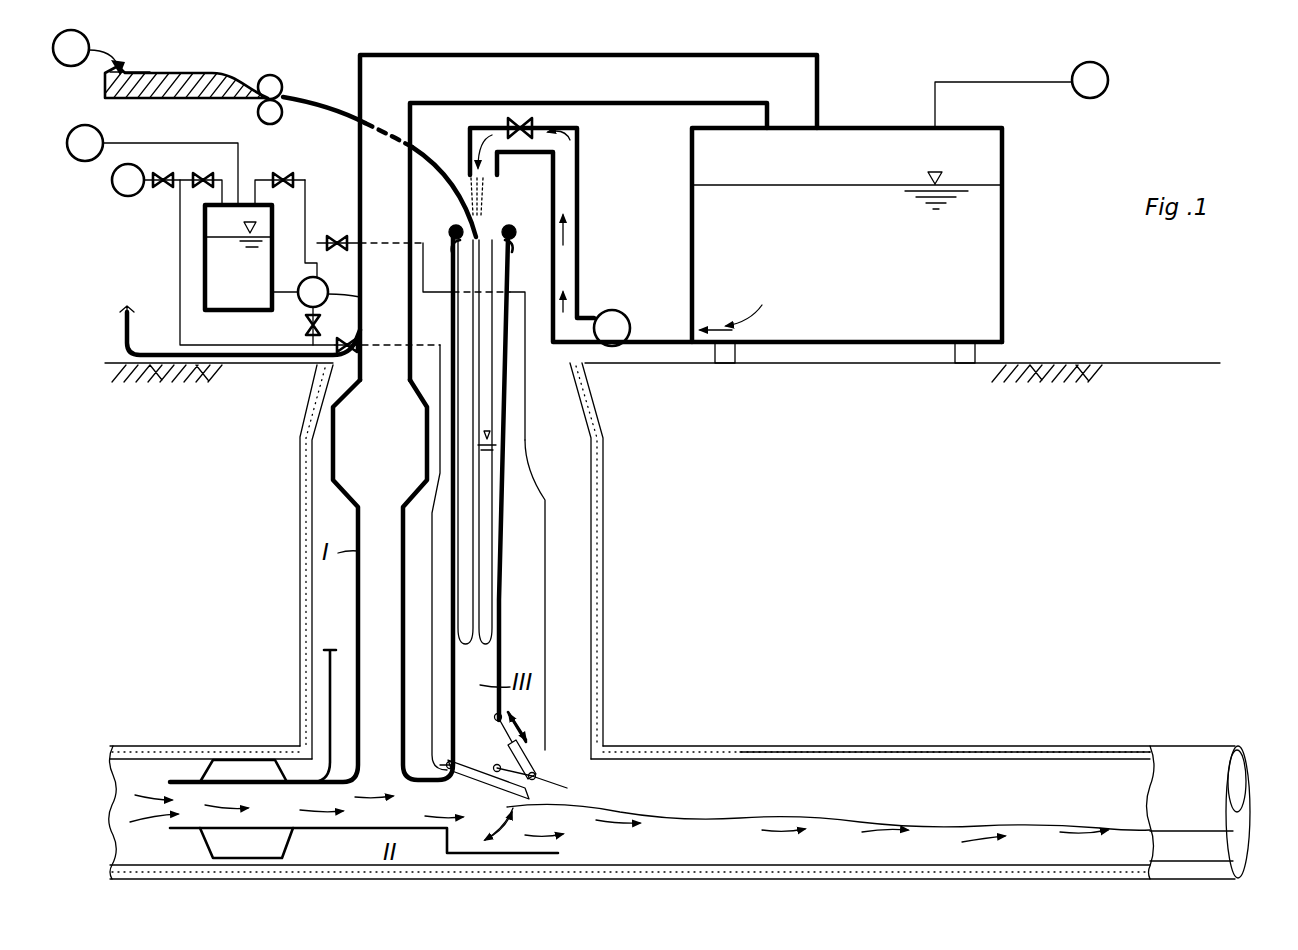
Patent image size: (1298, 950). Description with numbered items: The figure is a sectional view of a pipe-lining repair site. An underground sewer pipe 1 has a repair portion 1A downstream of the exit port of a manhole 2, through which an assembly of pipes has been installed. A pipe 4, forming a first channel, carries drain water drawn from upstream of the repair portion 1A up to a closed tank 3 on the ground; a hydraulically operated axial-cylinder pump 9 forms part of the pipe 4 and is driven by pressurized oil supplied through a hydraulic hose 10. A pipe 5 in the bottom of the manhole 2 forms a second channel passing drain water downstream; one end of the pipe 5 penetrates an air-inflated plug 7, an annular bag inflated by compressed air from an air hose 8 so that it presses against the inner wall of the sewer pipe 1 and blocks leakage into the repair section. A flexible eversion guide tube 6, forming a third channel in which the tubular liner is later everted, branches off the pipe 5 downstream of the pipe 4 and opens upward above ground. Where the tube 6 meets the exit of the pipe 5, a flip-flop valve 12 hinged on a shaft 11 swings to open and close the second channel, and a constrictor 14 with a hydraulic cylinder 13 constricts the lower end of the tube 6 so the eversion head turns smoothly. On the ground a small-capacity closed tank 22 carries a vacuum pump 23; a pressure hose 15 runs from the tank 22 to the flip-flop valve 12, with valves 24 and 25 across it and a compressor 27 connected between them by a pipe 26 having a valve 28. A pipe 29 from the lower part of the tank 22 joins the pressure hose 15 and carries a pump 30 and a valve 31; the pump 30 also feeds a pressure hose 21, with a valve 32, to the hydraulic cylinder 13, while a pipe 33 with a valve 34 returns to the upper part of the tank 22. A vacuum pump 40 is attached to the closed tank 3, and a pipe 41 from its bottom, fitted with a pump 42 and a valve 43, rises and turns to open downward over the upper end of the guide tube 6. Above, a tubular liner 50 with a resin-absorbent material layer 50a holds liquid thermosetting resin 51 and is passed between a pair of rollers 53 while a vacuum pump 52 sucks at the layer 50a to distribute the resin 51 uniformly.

The underground sewer pipe 1 is at (705, 738).
The repair portion 1A is at (882, 762).
The manhole 2 is at (561, 451).
The closed tank 3 is at (1003, 270).
The pipe 4 is at (358, 602).
The pipe 5 is at (338, 842).
The eversion guide tube 6 is at (502, 598).
The air-inflated plug 7 is at (202, 840).
The air hose 8 is at (298, 706).
The axial-cylinder pump 9 is at (333, 457).
The hydraulic hose 10 is at (124, 322).
The shaft 11 is at (444, 766).
The flip-flop valve 12 is at (503, 790).
The hydraulic cylinder 13 is at (536, 776).
The constrictor 14 is at (528, 745).
The pressure hose 15 is at (440, 345).
The pressure hose 21 is at (568, 544).
The small-capacity closed tank 22 is at (205, 270).
The vacuum pump 23 is at (72, 154).
The valve 24 is at (358, 362).
The valve 25 is at (204, 170).
The pipe 26 is at (163, 190).
The compressor 27 is at (112, 186).
The valve 28 is at (163, 170).
The pipe 29 is at (306, 324).
The pump 30 is at (330, 296).
The valve 31 is at (300, 352).
The valve 32 is at (338, 234).
The pipe 33 is at (306, 200).
The valve 34 is at (283, 171).
The vacuum pump 40 is at (1088, 98).
The pipe 41 is at (578, 256).
The pump 42 is at (608, 310).
The valve 43 is at (520, 140).
The tubular liner 50 is at (446, 160).
The resin-absorbent material layer 50a is at (150, 73).
The thermosetting resin 51 is at (205, 73).
The vacuum pump 52 is at (70, 66).
The rollers 53 is at (281, 76).